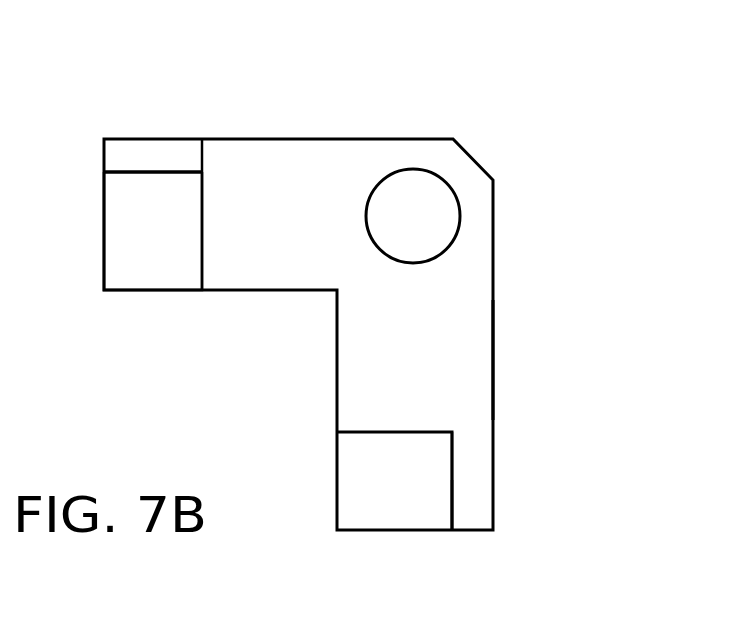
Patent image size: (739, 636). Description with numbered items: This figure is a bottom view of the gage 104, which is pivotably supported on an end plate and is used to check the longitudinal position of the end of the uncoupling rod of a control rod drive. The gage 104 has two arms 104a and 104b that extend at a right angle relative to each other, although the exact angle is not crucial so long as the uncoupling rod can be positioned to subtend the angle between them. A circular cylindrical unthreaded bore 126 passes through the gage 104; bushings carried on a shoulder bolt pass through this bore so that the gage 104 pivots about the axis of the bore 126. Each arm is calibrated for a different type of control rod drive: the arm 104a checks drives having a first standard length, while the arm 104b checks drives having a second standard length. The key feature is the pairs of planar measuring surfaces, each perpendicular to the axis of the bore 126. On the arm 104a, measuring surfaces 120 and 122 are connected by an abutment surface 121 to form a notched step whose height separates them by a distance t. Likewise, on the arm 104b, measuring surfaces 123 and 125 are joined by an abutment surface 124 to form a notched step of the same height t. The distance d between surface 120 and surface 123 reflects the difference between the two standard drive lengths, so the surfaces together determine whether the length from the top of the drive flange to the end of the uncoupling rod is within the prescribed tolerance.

The gage 104 is at (386, 136).
The arm 104a is at (228, 147).
The arm 104b is at (458, 367).
The measuring surface 120 is at (175, 152).
The abutment surface 121 is at (132, 176).
The measuring surface 122 is at (132, 265).
The measuring surface 123 is at (472, 452).
The abutment surface 124 is at (447, 508).
The measuring surface 125 is at (350, 493).
The circular cylindrical unthreaded bore 126 is at (458, 241).